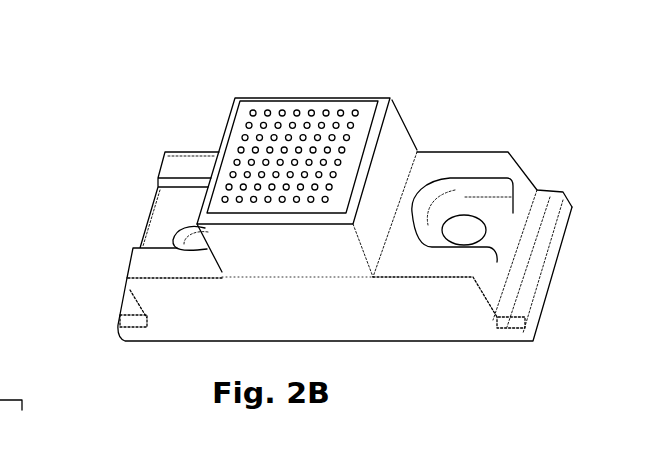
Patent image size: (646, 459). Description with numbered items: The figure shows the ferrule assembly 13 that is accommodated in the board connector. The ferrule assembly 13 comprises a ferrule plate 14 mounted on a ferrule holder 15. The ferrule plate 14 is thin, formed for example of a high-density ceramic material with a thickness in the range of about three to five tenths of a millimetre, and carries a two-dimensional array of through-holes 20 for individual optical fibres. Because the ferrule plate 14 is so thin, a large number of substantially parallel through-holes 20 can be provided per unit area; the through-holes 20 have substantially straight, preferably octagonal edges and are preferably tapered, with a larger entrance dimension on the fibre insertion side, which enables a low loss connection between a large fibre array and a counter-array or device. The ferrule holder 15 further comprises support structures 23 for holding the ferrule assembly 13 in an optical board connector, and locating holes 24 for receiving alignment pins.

The ferrule assembly 13 is at (140, 139).
The ferrule plate 14 is at (364, 101).
The ferrule holder 15 is at (227, 318).
The through-holes 20 is at (311, 112).
The support structures 23 is at (128, 312).
The locating holes 24 is at (185, 230).